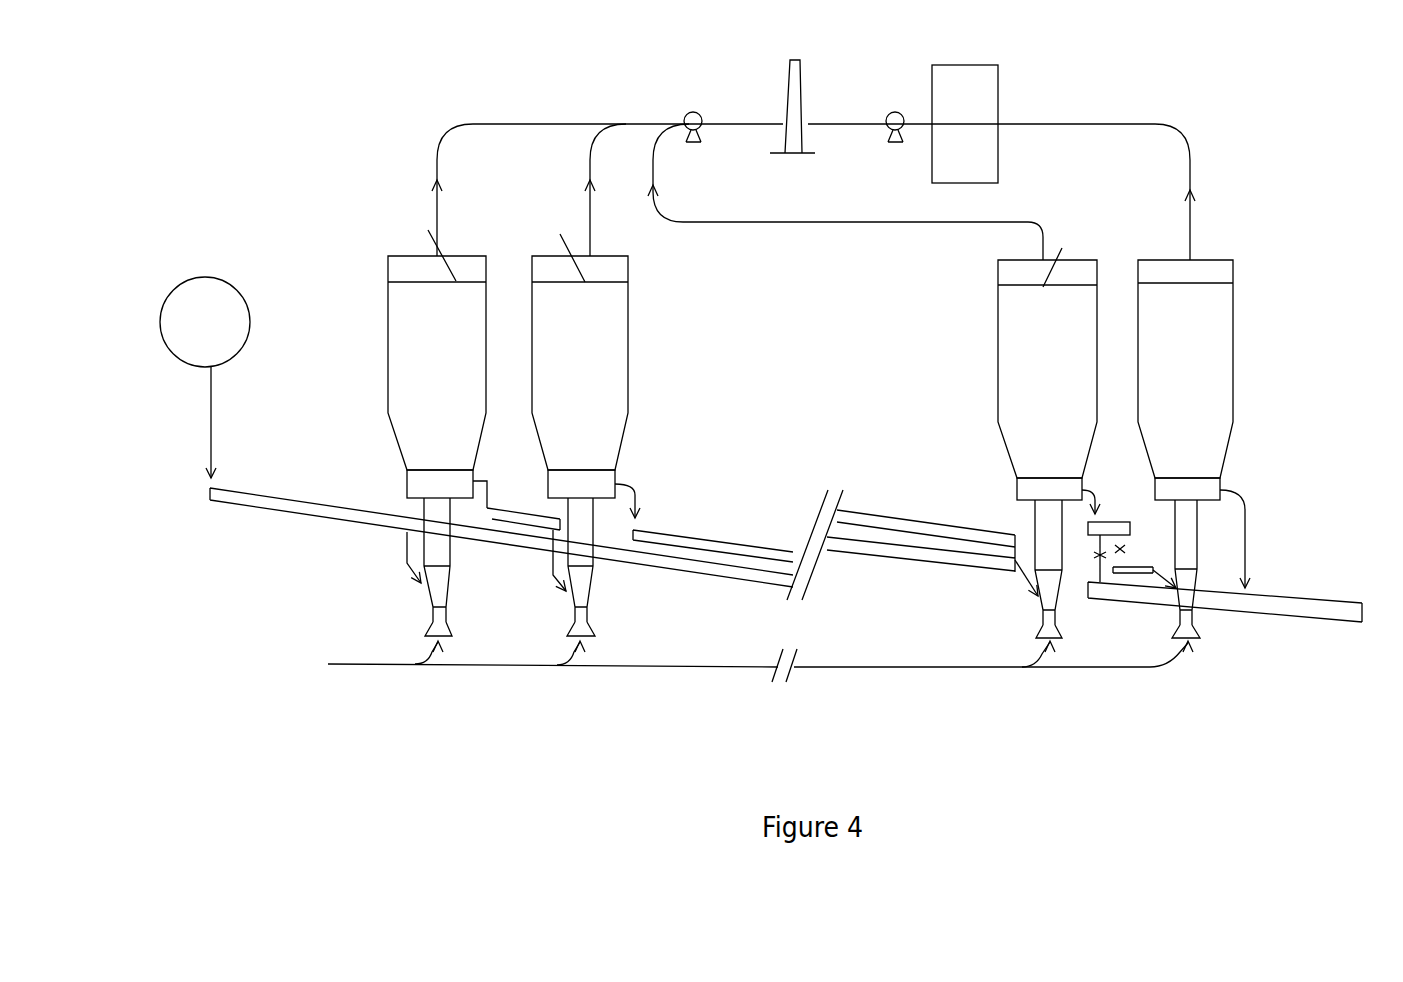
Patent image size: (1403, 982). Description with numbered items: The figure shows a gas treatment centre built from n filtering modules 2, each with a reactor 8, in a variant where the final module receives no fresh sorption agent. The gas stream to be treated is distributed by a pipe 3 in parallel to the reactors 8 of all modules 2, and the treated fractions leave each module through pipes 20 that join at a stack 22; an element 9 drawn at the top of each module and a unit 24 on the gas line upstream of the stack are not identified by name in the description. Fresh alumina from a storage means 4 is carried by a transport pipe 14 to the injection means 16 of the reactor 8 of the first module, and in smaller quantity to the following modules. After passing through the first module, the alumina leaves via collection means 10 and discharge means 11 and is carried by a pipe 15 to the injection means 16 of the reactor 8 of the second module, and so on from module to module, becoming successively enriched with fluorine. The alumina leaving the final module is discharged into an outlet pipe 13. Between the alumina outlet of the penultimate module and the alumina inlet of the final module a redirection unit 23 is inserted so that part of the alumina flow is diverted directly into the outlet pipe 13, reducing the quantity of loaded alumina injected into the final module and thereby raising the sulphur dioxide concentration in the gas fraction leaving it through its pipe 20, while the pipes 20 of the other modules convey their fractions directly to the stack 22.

The filtering module 2 is at (408, 336).
The pipe 3 is at (700, 672).
The storage means 4 is at (240, 288).
The reactor 8 is at (448, 585).
The vessel inlet 9 is at (743, 247).
The collection means 10 is at (415, 488).
The discharge means 11 is at (473, 472).
The outlet pipe 13 is at (1272, 592).
The transport pipe 14 is at (718, 577).
The discharge pipe 15 is at (523, 515).
The injection means 16 is at (420, 583).
The pipe 20 is at (434, 166).
The stack 22 is at (786, 90).
The redirection unit 23 is at (1117, 514).
The treatment unit 24 is at (970, 60).